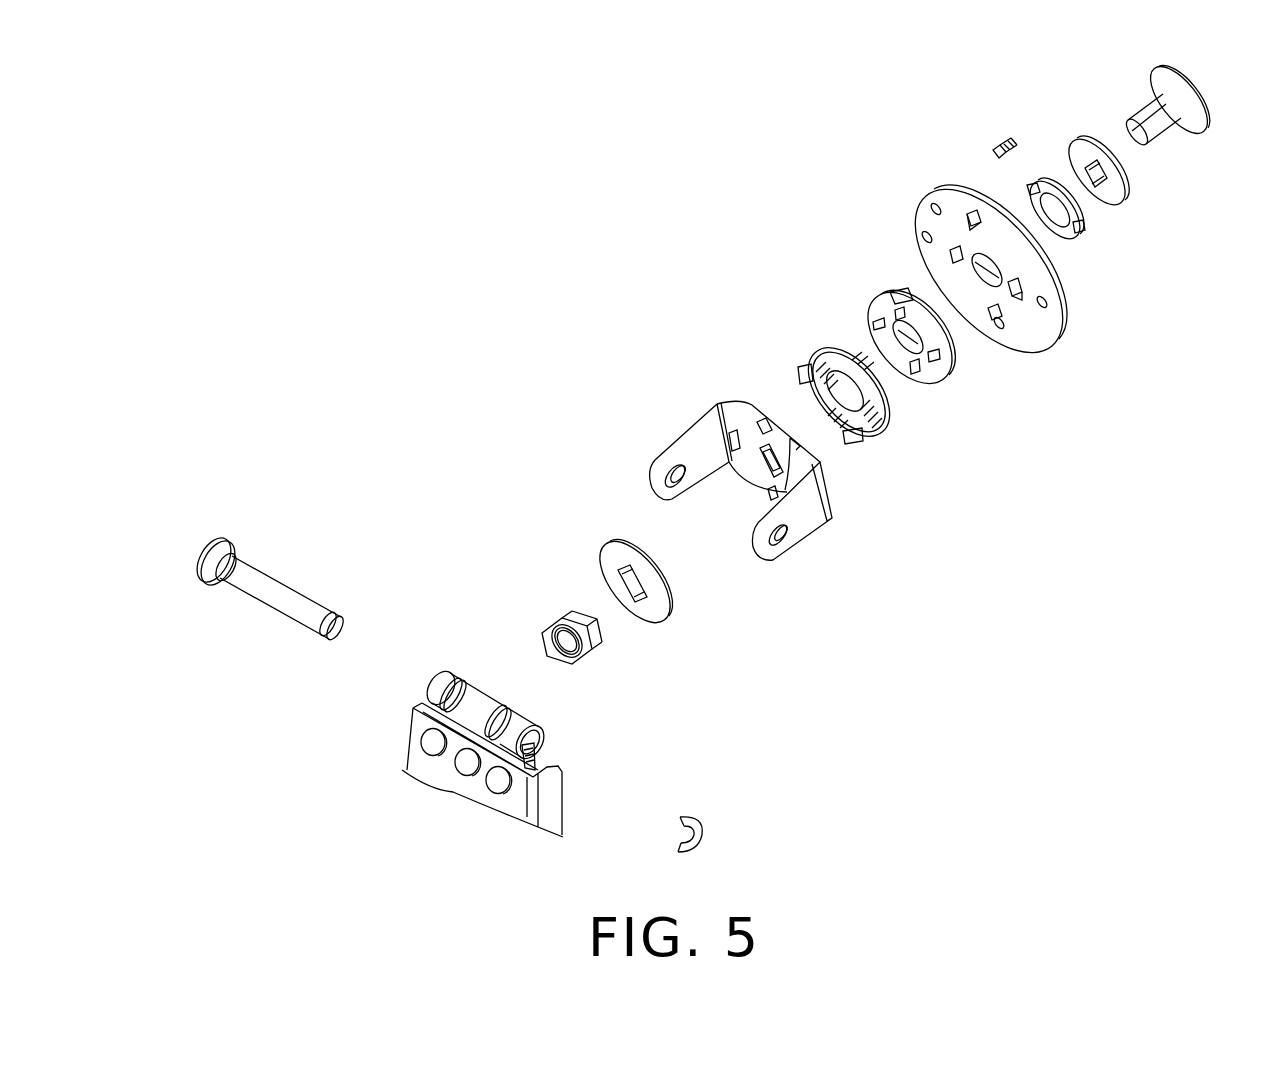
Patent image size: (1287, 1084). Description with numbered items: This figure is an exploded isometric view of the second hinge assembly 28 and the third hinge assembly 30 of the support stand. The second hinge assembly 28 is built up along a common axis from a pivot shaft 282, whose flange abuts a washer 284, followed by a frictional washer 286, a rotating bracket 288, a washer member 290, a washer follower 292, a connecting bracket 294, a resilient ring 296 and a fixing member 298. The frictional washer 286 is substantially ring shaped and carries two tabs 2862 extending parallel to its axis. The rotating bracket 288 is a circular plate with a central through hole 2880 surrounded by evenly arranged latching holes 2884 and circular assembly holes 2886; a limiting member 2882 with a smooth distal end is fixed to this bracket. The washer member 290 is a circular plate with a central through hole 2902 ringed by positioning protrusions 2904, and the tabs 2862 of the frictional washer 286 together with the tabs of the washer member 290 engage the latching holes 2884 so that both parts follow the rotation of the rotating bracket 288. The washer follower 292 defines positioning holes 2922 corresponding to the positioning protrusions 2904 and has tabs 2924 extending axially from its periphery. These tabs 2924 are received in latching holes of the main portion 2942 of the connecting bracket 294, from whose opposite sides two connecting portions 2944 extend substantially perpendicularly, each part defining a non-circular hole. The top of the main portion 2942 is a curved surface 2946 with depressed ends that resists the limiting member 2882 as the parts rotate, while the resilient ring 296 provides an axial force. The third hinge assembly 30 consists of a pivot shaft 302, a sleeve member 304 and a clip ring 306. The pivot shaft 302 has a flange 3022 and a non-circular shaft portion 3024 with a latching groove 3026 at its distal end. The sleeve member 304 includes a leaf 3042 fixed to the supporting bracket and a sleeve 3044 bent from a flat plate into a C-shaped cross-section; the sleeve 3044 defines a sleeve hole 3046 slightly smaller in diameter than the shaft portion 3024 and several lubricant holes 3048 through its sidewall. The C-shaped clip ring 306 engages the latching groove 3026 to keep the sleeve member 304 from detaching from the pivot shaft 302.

The second hinge assembly 28 is at (486, 277).
The pivot shaft 282 is at (1163, 123).
The washer 284 is at (1080, 153).
The frictional washer 286 is at (1134, 243).
The tabs 2862 is at (1083, 223).
The rotating bracket 288 is at (998, 250).
The through hole 2880 is at (970, 267).
The limiting member 2882 is at (992, 133).
The latching holes 2884 is at (1018, 295).
The assembly holes 2886 is at (1045, 303).
The washer member 290 is at (936, 328).
The through hole 2902 is at (925, 372).
The positioning protrusions 2904 is at (920, 340).
The washer follower 292 is at (865, 406).
The positioning holes 2922 is at (858, 435).
The tabs 2924 is at (852, 442).
The connecting bracket 294 is at (743, 452).
The main portion 2942 is at (740, 415).
The connecting portions 2944 is at (697, 446).
The curved surface 2946 is at (792, 442).
The resilient ring 296 is at (608, 545).
The fixing member 298 is at (565, 607).
The third hinge assembly 30 is at (432, 636).
The pivot shaft 302 is at (235, 629).
The flange 3022 is at (198, 578).
The shaft portion 3024 is at (267, 593).
The latching groove 3026 is at (300, 668).
The sleeve member 304 is at (514, 767).
The leaf 3042 is at (533, 757).
The sleeve 3044 is at (521, 722).
The sleeve hole 3046 is at (500, 760).
The lubricant holes 3048 is at (423, 692).
The clip ring 306 is at (705, 829).